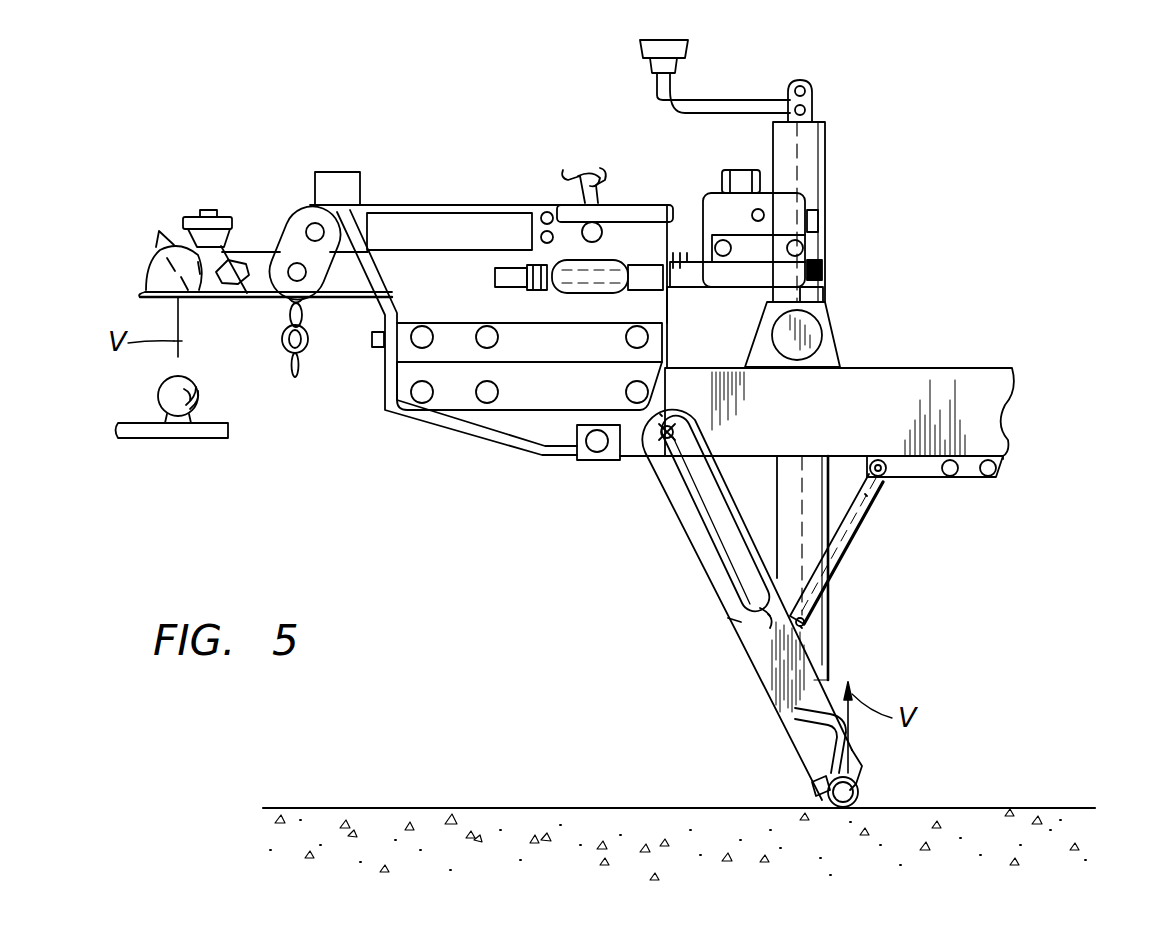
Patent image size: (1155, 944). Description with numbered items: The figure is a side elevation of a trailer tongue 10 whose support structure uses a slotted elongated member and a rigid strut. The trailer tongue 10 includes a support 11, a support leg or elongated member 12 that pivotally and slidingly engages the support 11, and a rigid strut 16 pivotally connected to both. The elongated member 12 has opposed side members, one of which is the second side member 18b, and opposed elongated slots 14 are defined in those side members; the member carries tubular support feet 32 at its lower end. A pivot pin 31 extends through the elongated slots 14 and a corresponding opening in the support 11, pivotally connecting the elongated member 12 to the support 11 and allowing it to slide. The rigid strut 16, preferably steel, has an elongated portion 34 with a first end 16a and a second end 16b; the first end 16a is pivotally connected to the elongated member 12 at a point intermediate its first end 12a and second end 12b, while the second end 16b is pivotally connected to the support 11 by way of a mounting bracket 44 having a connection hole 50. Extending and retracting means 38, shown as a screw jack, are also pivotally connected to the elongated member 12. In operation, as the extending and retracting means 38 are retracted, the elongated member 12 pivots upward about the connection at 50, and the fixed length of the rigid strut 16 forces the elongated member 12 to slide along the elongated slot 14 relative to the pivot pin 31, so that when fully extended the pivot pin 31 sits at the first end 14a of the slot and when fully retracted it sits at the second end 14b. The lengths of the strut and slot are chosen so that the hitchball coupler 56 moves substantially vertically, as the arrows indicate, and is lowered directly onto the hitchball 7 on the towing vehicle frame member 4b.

The vehicle frame member 4b is at (1005, 461).
The hitchball 7 is at (172, 398).
The trailer tongue 10 is at (469, 466).
The support 11 is at (930, 378).
The elongated member 12 is at (778, 677).
The first end of elongated member 12a is at (641, 453).
The second end of elongated member 12b is at (855, 759).
The elongated slot 14 is at (723, 541).
The first end of elongated slot 14a is at (660, 415).
The second end of elongated slot 14b is at (770, 613).
The rigid strut 16 is at (855, 570).
The first end of rigid strut 16a is at (802, 627).
The second end of rigid strut 16b is at (867, 497).
The second side member 18b is at (728, 618).
The pivot pin 31 is at (662, 498).
The tubular support feet 32 is at (858, 793).
The elongated portion 34 is at (825, 572).
The extending and retracting means 38 is at (820, 616).
The mounting bracket 44 is at (968, 475).
The connection hole 50 is at (882, 473).
The hitchball coupler 56 is at (160, 260).